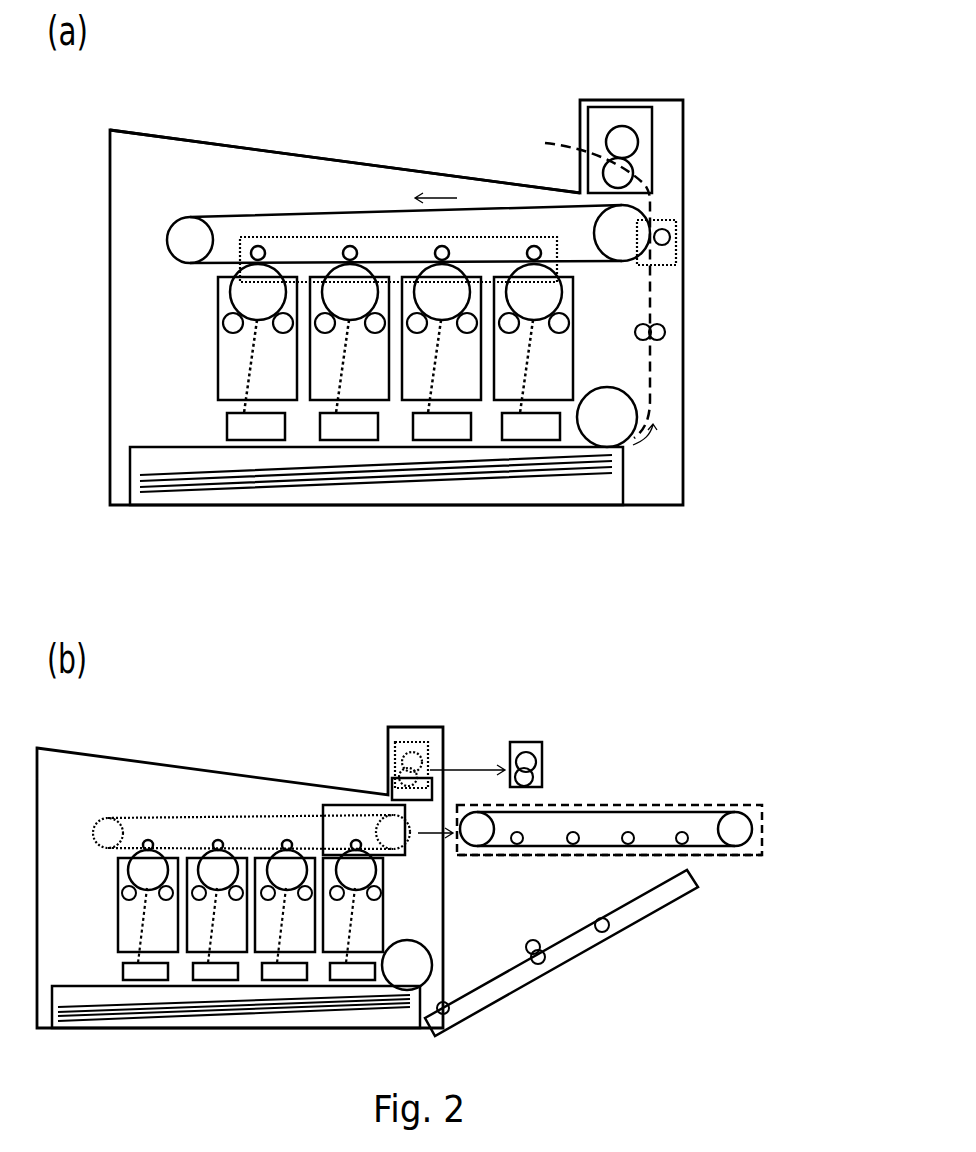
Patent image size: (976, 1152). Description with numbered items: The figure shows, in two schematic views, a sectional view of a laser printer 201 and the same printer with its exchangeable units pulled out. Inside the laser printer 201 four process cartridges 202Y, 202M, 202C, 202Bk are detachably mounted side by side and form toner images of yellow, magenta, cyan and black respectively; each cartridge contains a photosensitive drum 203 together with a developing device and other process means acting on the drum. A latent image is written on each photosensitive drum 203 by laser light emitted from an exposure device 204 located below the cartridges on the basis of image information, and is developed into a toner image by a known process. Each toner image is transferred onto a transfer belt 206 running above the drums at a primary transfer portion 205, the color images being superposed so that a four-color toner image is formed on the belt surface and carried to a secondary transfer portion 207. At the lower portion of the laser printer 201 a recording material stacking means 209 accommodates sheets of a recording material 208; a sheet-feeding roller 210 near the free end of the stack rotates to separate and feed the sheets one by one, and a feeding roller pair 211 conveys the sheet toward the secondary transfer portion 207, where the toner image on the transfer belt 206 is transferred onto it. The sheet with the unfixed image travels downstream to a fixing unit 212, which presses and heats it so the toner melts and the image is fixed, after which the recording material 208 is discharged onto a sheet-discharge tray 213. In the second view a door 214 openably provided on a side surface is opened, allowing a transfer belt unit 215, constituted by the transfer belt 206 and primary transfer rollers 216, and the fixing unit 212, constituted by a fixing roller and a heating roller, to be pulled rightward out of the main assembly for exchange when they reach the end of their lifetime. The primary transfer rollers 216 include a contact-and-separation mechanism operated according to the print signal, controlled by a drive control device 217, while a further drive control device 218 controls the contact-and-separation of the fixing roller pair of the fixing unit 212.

The laser printer 201 is at (165, 187).
The process cartridge for yellow 202Y is at (230, 353).
The process cartridge for magenta 202M is at (325, 387).
The process cartridge for cyan 202C is at (412, 387).
The process cartridge for black 202Bk is at (505, 387).
The photosensitive drum 203 is at (340, 273).
The exposure device 204 is at (243, 428).
The primary transfer portion 205 is at (263, 235).
The transfer belt 206 is at (232, 213).
The secondary transfer portion 207 is at (678, 222).
The recording material 208 is at (158, 475).
The recording material stacking means 209 is at (602, 493).
The sheet-feeding roller 210 is at (617, 403).
The feeding roller pair 211 is at (665, 327).
The fixing unit 212 is at (645, 123).
The sheet-discharge tray 213 is at (483, 178).
The door 214 is at (632, 917).
The transfer belt unit 215 is at (495, 855).
The primary transfer rollers 216 is at (682, 833).
The drive control device 217 is at (335, 803).
The drive control device 218 is at (392, 790).